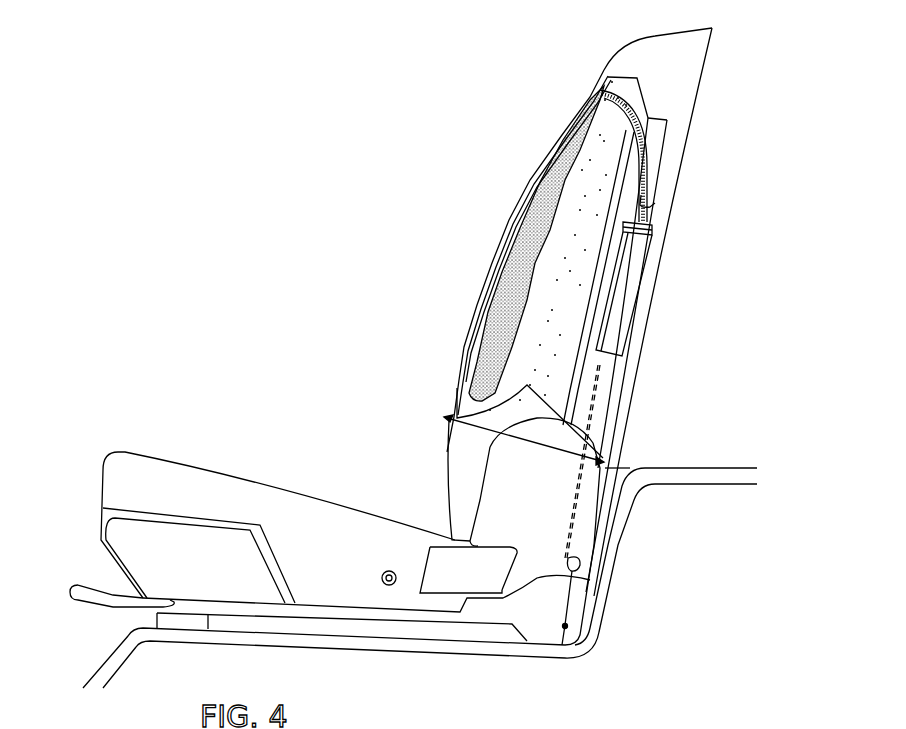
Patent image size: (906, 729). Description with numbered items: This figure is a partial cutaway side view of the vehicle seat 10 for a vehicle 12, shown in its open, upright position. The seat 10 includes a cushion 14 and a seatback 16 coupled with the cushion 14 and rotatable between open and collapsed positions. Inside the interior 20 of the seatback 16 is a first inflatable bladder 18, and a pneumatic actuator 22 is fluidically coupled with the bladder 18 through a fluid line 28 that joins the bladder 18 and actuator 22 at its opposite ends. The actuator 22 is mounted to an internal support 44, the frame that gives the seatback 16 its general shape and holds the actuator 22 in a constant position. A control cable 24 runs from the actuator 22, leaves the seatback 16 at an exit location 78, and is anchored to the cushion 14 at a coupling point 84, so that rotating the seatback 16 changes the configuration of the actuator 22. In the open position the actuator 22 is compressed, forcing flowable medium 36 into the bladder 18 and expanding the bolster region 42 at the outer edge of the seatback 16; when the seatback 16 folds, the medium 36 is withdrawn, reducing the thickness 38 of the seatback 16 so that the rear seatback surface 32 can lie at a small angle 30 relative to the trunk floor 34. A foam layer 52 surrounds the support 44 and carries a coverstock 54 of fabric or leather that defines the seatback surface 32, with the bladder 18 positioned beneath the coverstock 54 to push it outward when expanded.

The vehicle seat 10 is at (483, 77).
The vehicle 12 is at (700, 604).
The cushion 14 is at (110, 477).
The seatback 16 is at (687, 78).
The first inflatable bladder 18 is at (521, 260).
The interior 20 is at (622, 91).
The pneumatic actuator 22 is at (635, 282).
The control cable 24 is at (603, 383).
The fluid line 28 is at (645, 170).
The angle 30 is at (622, 464).
The rear seatback surface 32 is at (645, 318).
The trunk floor 34 is at (713, 467).
The flowable medium 36 is at (509, 298).
The thickness 38 is at (485, 438).
The bolster region 42 is at (517, 220).
The internal support 44 is at (645, 202).
The foam layer 52 is at (597, 145).
The coverstock 54 is at (540, 163).
The exit location 78 is at (582, 567).
The coupling point 84 is at (566, 628).